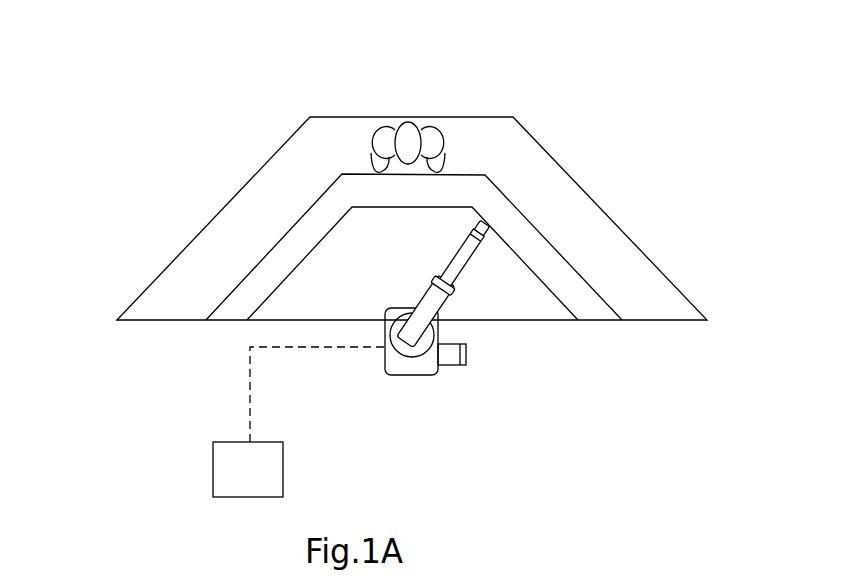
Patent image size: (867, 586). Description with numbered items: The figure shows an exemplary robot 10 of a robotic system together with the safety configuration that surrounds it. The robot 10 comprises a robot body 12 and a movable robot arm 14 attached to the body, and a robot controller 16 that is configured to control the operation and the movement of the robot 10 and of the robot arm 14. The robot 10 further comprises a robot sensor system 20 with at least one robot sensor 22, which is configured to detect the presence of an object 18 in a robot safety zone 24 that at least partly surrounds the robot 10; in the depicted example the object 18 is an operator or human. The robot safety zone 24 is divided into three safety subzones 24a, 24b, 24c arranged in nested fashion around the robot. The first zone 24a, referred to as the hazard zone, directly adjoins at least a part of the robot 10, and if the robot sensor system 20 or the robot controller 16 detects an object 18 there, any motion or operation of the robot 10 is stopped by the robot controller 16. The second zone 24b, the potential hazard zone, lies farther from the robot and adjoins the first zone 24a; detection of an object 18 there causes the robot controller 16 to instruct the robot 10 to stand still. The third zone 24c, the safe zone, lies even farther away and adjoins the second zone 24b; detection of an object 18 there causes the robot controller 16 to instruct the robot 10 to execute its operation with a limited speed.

The robot 10 is at (660, 99).
The robot body 12 is at (417, 386).
The robot arm 14 is at (478, 222).
The robot controller 16 is at (213, 468).
The object 18 is at (402, 108).
The robot sensor system 20 is at (447, 376).
The robot sensor 22 is at (466, 352).
The robot safety zone 24 is at (648, 239).
The first zone 24a is at (290, 302).
The second zone 24b is at (228, 308).
The third zone 24c is at (168, 292).